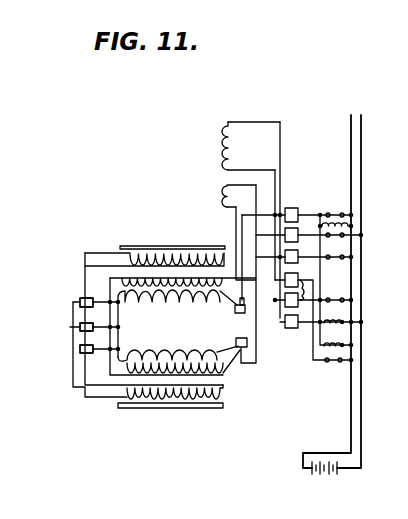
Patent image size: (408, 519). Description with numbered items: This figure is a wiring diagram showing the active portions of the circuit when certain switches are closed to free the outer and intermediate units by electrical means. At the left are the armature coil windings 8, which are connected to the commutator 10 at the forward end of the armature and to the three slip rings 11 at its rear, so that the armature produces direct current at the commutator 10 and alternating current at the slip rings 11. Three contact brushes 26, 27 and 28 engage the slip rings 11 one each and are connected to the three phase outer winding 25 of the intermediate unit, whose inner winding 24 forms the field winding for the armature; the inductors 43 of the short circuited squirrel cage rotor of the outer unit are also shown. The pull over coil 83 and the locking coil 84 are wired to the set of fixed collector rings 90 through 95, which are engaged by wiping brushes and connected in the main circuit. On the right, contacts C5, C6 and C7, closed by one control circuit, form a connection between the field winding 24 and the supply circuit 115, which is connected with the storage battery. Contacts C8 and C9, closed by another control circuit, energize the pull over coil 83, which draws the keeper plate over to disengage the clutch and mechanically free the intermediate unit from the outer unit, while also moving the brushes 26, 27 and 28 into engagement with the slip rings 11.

The coil windings 8 is at (163, 303).
The commutator 10 is at (240, 313).
The slip rings 11 is at (93, 298).
The inner winding 24 is at (228, 377).
The outer winding 25 is at (118, 400).
The contact brush 26 is at (84, 334).
The contact brush 27 is at (84, 310).
The contact brush 28 is at (80, 350).
The inductors 43 is at (167, 246).
The energizing coil 83 is at (235, 150).
The energizing coil 84 is at (222, 198).
The collector ring 90 is at (292, 208).
The collector ring 95 is at (291, 328).
The supply circuit 115 is at (350, 432).
The contact C5 is at (361, 216).
The contact C6 is at (308, 290).
The contact C7 is at (335, 242).
The contact C8 is at (353, 352).
The contact C9 is at (335, 328).